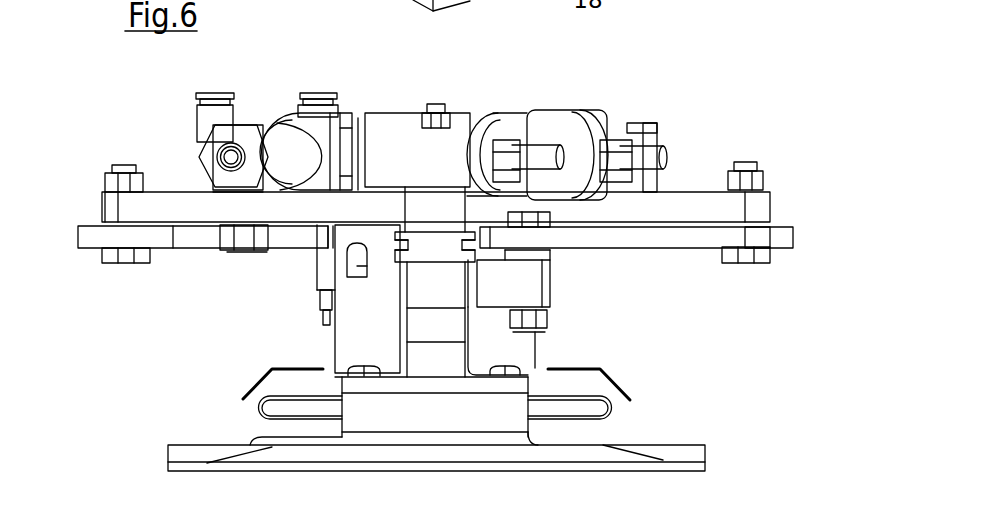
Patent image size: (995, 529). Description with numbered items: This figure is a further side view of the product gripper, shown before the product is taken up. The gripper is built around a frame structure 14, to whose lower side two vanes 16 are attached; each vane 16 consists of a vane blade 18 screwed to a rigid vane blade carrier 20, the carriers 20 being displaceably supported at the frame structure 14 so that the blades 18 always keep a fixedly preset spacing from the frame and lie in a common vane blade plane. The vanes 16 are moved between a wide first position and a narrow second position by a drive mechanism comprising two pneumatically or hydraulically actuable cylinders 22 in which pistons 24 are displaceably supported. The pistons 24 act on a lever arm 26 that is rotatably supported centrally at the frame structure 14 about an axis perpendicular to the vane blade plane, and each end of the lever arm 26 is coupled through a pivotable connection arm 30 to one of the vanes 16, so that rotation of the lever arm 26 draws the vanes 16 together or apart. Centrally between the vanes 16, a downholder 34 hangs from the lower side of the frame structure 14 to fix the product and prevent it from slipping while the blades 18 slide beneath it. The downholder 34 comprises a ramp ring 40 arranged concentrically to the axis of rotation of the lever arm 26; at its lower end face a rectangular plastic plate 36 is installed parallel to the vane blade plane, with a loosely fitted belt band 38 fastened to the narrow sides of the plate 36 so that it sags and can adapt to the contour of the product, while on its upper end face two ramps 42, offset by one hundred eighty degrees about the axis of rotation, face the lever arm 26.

The frame structure 14 is at (433, 238).
The vane 16 is at (488, 447).
The vane blade 18 is at (705, 453).
The vane blade carrier 20 is at (425, 367).
The cylinder 22 is at (362, 118).
The piston 24 is at (230, 152).
The lever arm 26 is at (683, 202).
The connection arm 30 is at (192, 238).
The downholder 34 is at (385, 329).
The plastic plate 36 is at (587, 388).
The belt band 38 is at (540, 417).
The ramp ring 40 is at (348, 345).
The ramp 42 is at (347, 245).